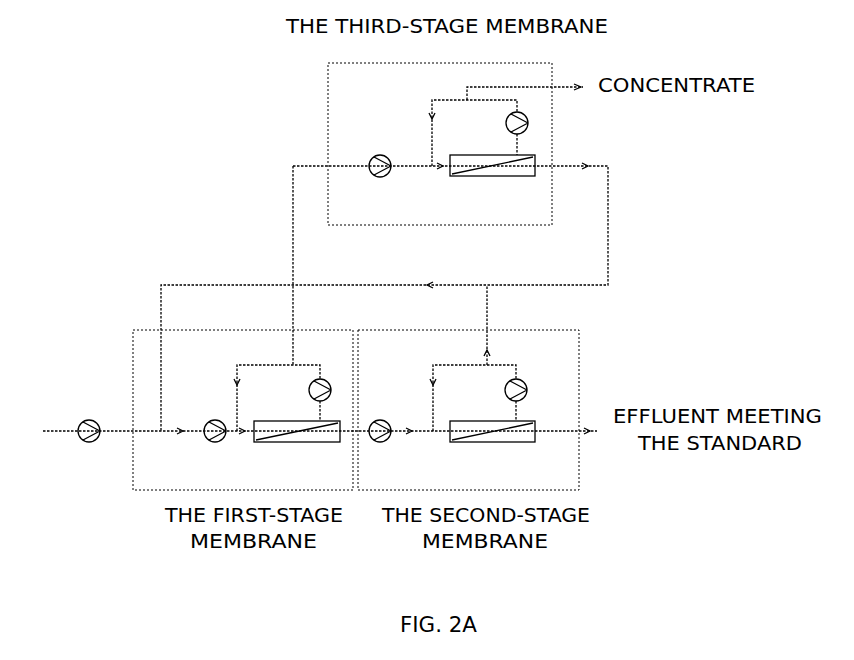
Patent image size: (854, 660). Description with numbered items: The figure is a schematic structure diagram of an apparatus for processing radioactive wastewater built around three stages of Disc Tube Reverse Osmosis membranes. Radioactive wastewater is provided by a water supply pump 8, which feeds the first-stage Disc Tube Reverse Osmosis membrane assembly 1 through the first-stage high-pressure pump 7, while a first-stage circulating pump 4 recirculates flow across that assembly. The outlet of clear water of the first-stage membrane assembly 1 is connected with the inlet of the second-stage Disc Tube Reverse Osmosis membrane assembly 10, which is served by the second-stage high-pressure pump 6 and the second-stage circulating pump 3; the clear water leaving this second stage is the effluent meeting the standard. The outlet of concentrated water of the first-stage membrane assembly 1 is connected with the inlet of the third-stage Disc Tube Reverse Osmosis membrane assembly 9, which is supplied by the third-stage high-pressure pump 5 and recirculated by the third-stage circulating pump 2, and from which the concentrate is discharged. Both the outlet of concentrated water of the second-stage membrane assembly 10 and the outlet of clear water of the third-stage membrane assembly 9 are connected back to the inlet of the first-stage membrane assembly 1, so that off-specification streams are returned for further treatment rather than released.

The first-stage Disc Tube Reverse Osmosis membrane assembly 1 is at (297, 448).
The third-stage circulating pump 2 is at (525, 126).
The second-stage circulating pump 3 is at (527, 391).
The first-stage circulating pump 4 is at (328, 391).
The third-stage high-pressure pump 5 is at (380, 182).
The second-stage high-pressure pump 6 is at (380, 448).
The first-stage high-pressure pump 7 is at (215, 448).
The water supply pump 8 is at (89, 448).
The third-stage Disc Tube Reverse Osmosis membrane assembly 9 is at (492, 182).
The second-stage Disc Tube Reverse Osmosis membrane assembly 10 is at (492, 448).